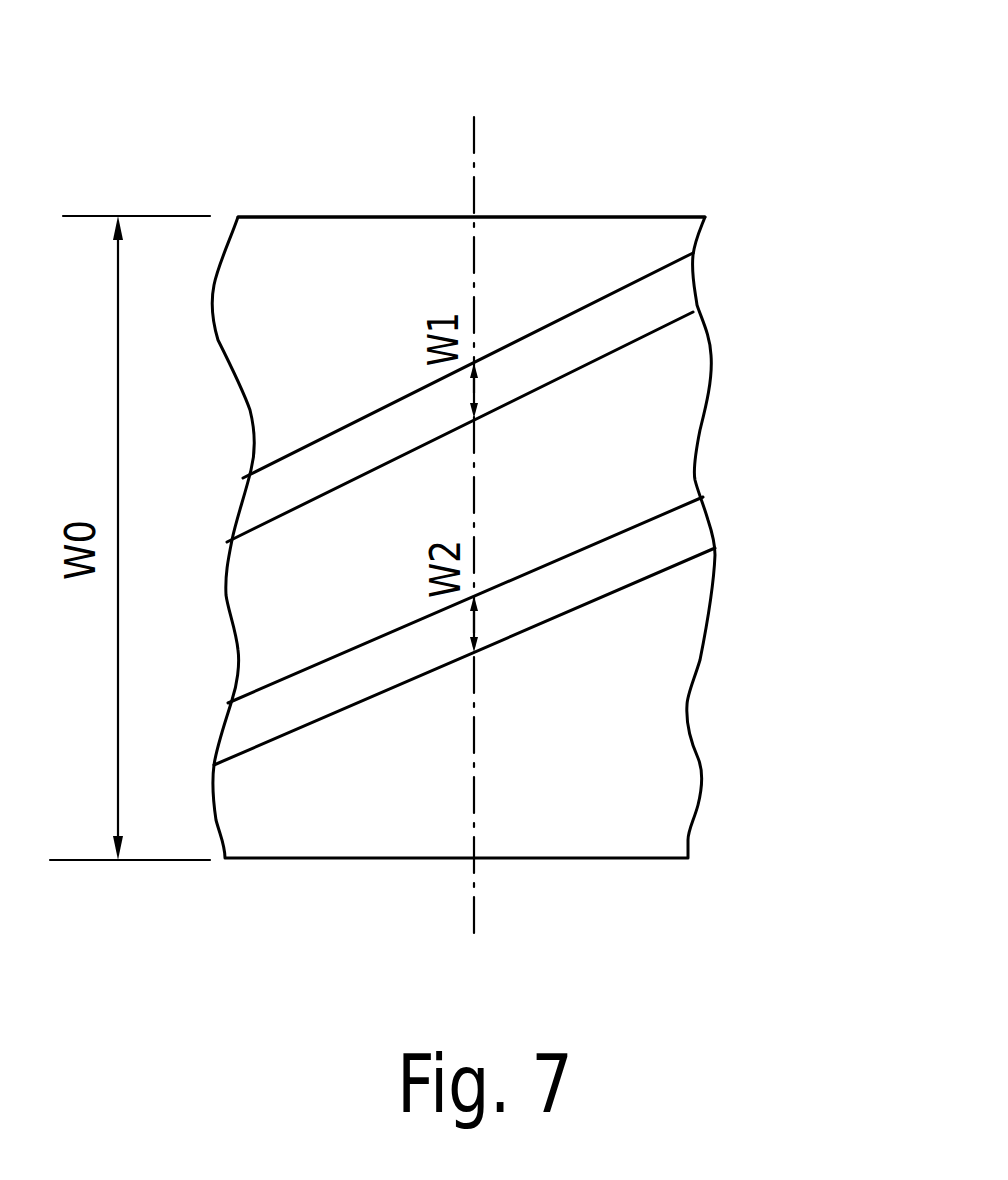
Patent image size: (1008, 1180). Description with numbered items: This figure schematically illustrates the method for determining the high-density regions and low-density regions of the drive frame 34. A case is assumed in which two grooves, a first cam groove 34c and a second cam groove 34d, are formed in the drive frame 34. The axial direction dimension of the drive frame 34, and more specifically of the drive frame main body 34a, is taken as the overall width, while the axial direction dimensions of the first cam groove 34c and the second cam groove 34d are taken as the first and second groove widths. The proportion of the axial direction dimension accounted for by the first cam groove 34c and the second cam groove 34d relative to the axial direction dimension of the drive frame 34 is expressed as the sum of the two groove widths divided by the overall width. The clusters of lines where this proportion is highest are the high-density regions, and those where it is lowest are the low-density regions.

The drive frame 34 is at (716, 190).
The drive frame main body 34a is at (588, 240).
The first cam groove 34c is at (646, 274).
The second cam groove 34d is at (643, 525).